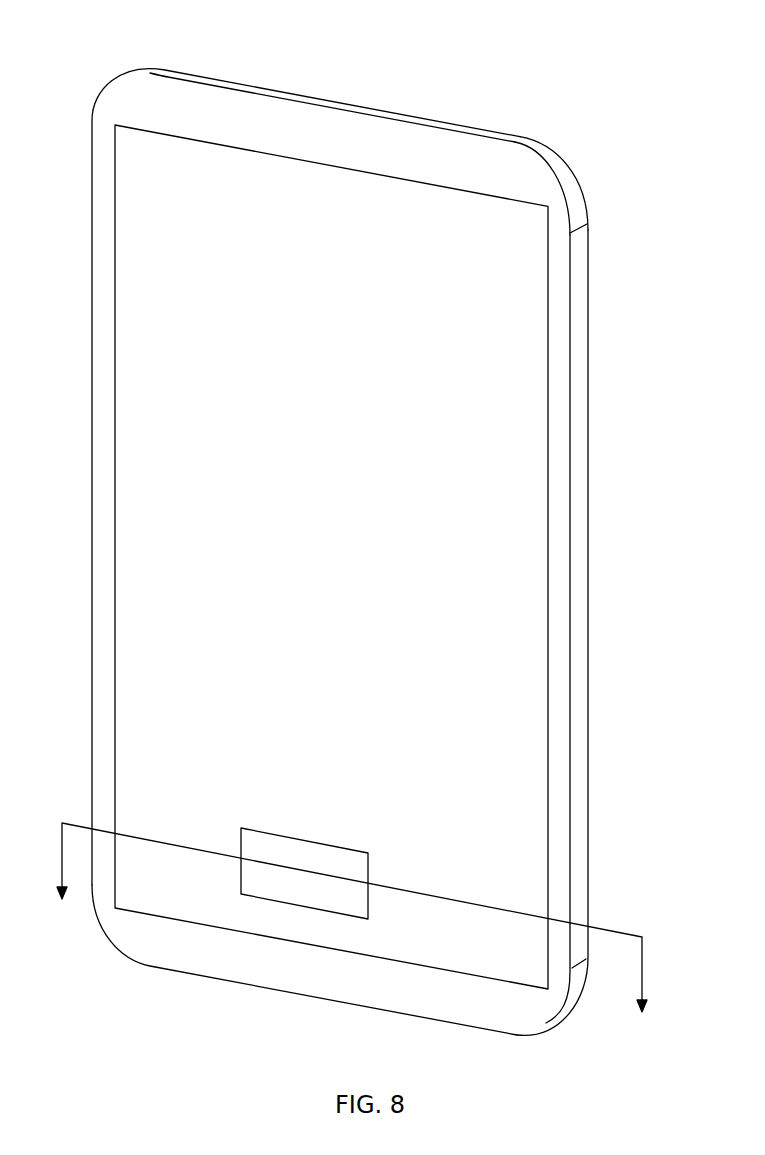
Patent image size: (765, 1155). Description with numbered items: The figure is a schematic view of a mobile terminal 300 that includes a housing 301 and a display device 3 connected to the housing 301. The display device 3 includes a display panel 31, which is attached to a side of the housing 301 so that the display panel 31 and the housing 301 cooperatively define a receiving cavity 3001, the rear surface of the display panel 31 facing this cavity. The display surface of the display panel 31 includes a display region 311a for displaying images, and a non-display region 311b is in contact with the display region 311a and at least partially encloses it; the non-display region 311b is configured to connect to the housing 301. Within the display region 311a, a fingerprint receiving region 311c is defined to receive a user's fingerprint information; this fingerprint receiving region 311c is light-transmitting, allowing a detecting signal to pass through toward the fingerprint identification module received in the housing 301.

The mobile terminal 300 is at (536, 60).
The display device 3 is at (461, 156).
The receiving cavity 3001 is at (569, 184).
The housing 301 is at (583, 333).
The display panel 31 is at (573, 548).
The display region 311a is at (530, 711).
The non-display region 311b is at (187, 950).
The fingerprint receiving region 311c is at (353, 866).